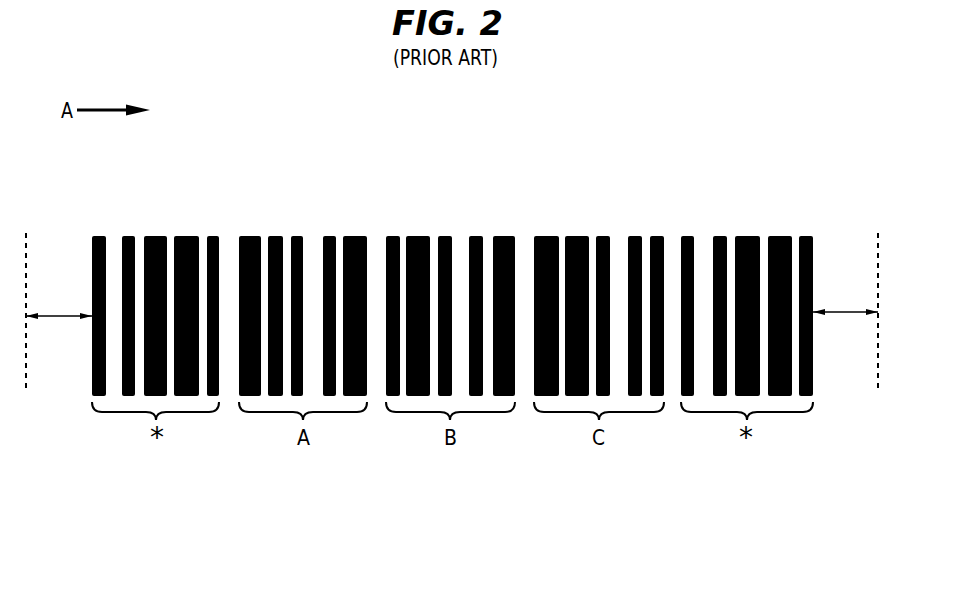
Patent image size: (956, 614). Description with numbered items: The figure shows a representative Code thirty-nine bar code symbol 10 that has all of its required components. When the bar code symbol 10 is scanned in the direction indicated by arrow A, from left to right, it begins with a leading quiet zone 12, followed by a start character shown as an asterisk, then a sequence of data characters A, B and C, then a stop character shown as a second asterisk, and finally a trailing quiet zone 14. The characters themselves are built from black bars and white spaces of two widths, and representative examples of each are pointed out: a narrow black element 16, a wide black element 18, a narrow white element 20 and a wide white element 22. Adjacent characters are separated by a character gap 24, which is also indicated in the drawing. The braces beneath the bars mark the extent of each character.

The bar code symbol 10 is at (585, 133).
The leading quiet zone 12 is at (57, 318).
The trailing quiet zone 14 is at (845, 308).
The narrow black element 16 is at (92, 245).
The wide black element 18 is at (150, 236).
The narrow white element 20 is at (286, 237).
The wide white element 22 is at (318, 238).
The character gap 24 is at (523, 242).